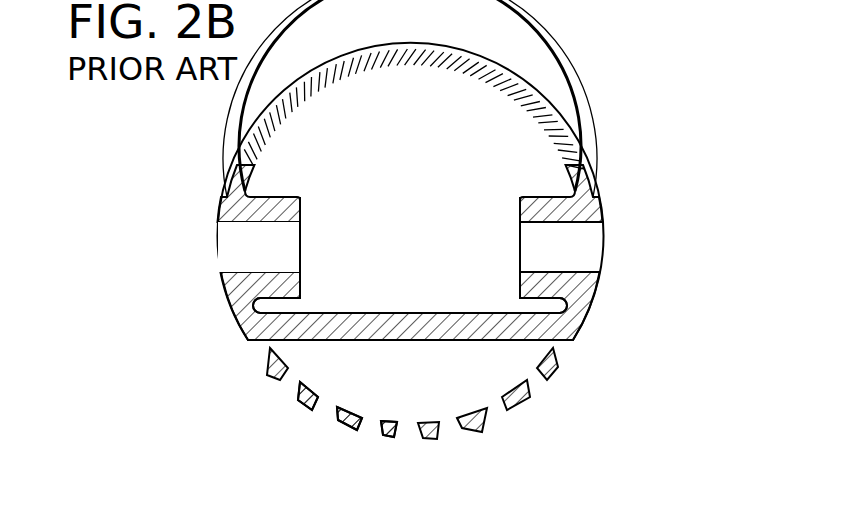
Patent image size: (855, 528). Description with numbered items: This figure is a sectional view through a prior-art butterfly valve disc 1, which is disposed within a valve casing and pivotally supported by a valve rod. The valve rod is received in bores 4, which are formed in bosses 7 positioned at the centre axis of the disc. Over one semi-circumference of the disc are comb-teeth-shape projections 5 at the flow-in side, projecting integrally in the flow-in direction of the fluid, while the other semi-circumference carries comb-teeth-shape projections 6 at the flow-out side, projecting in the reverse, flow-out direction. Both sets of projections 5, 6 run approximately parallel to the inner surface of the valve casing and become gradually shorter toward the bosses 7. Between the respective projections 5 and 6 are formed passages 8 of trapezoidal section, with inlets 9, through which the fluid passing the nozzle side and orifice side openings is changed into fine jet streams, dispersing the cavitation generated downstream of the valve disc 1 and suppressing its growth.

The valve disc 1 is at (606, 114).
The bores 4 is at (280, 222).
The comb-teeth-shape projections at the flow-in side 5 is at (455, 53).
The comb-teeth-shape projections at the flow-out side 6 is at (388, 439).
The bosses 7 is at (285, 304).
The trapezoidal passages 8 is at (551, 100).
The inlets 9 is at (419, 66).